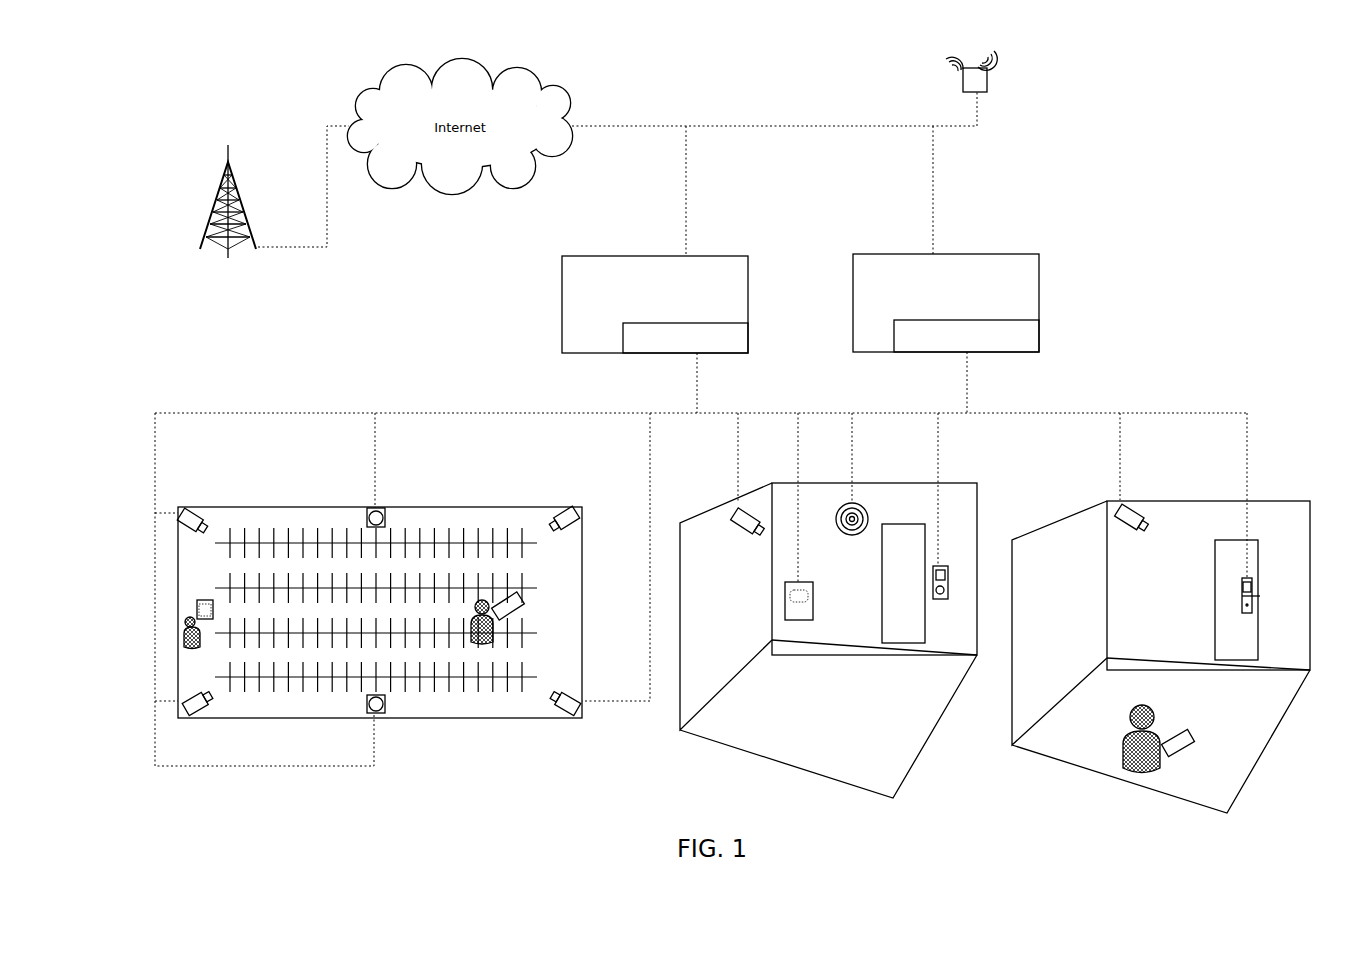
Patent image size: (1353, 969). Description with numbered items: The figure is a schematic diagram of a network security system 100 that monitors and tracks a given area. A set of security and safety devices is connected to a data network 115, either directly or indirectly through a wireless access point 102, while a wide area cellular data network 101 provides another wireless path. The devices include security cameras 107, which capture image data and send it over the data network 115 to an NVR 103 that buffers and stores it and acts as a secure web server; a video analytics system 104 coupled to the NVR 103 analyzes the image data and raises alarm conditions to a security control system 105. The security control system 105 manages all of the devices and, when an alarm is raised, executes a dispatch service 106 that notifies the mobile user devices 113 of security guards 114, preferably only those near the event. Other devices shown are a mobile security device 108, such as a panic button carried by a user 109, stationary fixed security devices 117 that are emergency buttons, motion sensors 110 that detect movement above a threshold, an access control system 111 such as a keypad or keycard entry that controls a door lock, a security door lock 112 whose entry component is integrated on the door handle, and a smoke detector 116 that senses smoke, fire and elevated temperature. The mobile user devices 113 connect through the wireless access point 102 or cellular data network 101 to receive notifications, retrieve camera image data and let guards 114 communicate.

The network security system 100 is at (1215, 75).
The cellular data network 101 is at (214, 186).
The wireless access point 102 is at (927, 71).
The NVR 103 is at (704, 302).
The video analytics system 104 is at (734, 326).
The security control system 105 is at (1002, 303).
The dispatch service 106 is at (1023, 331).
The security camera 107 is at (663, 611).
The mobile security device 108 is at (160, 606).
The user 109 is at (153, 633).
The motion sensor 110 is at (761, 596).
The access control system 111 is at (911, 626).
The security door lock 112 is at (1274, 588).
The mobile user device 113 is at (872, 679).
The security guard 114 is at (815, 698).
The data network 115 is at (380, 536).
The smoke detector 116 is at (881, 495).
The fixed security device 117 is at (408, 618).